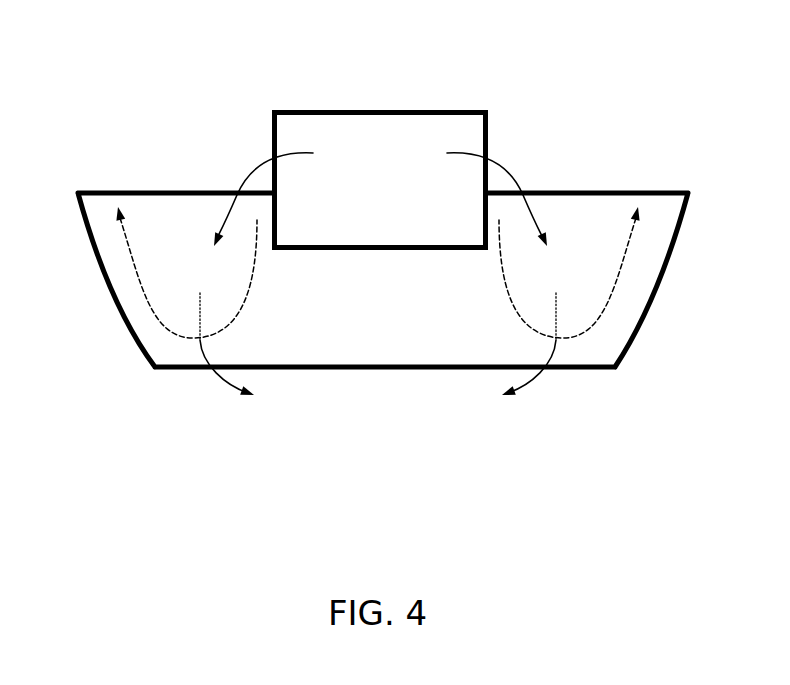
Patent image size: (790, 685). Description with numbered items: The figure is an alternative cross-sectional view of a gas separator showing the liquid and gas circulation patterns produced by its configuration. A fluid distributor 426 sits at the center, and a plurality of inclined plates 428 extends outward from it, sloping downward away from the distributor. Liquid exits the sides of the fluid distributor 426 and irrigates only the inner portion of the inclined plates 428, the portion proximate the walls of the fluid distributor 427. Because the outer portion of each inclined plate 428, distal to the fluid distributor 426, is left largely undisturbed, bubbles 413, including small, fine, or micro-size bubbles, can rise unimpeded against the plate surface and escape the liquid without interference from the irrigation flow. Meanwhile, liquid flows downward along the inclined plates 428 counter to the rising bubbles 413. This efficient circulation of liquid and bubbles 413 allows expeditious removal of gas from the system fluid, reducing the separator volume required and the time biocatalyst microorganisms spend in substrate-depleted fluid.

The inclined plates 428 is at (162, 223).
The fluid distributor 426 is at (407, 138).
The fluid distributor wall 427 is at (277, 125).
The bubbles 413 is at (150, 305).